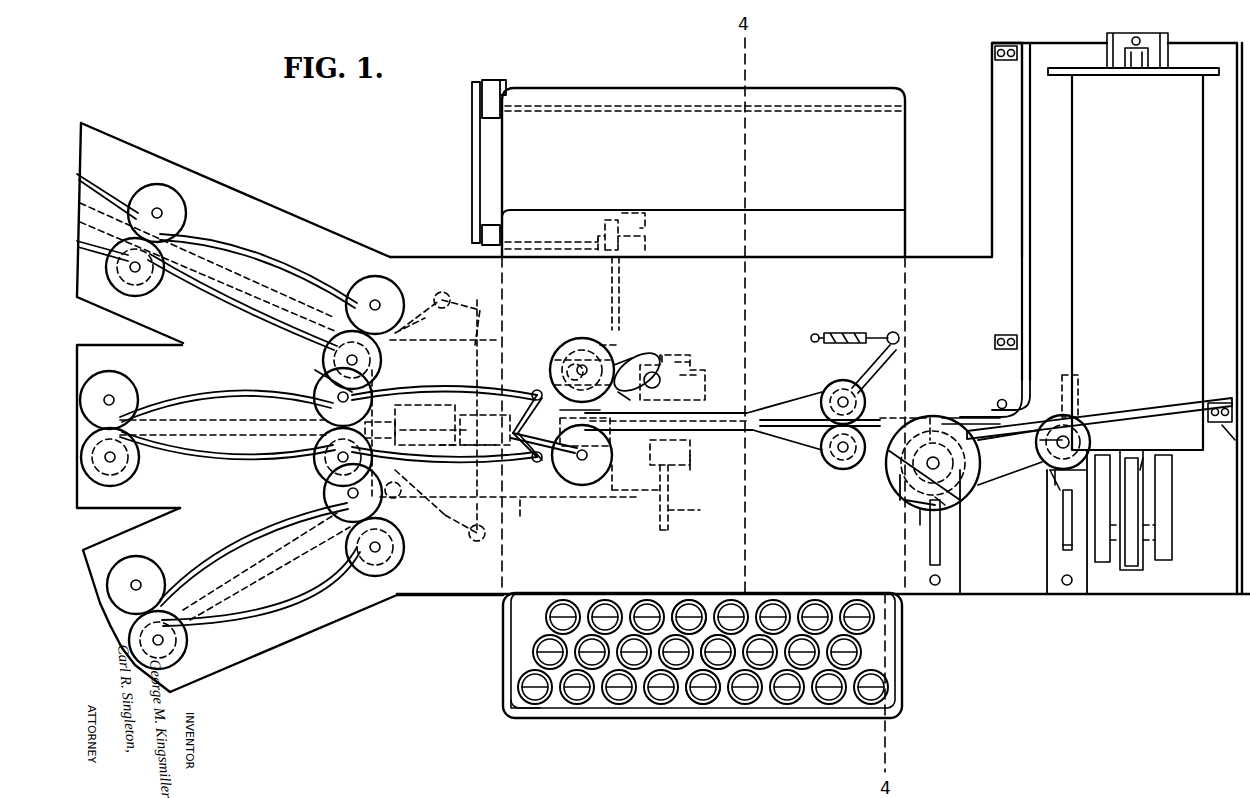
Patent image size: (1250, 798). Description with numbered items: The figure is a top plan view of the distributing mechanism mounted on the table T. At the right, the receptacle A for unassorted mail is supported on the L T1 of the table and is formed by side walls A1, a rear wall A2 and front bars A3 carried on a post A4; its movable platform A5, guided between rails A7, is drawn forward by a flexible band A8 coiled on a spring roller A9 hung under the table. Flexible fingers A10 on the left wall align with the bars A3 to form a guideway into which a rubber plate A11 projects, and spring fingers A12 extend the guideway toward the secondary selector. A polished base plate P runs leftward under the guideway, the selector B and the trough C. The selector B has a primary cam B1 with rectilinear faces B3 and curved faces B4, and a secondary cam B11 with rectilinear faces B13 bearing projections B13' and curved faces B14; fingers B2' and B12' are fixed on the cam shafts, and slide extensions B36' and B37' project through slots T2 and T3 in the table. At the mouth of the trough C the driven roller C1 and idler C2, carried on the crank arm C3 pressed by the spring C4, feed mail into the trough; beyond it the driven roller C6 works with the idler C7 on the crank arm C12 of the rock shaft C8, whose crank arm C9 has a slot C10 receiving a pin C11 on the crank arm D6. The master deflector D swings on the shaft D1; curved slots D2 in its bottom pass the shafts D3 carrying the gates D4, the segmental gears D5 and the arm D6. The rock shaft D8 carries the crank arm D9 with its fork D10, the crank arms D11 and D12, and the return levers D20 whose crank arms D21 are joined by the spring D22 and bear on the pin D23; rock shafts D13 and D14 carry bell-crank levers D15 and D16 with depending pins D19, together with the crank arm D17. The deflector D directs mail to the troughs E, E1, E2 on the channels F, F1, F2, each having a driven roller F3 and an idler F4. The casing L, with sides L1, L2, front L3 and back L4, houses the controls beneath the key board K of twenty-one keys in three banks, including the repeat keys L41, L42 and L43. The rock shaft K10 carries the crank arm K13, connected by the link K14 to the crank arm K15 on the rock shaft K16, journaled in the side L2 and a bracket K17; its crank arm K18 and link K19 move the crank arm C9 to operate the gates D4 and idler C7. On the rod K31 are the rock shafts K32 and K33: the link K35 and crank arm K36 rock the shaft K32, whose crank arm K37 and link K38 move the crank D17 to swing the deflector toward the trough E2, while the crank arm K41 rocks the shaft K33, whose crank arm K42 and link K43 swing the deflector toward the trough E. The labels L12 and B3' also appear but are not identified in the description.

The frame T is at (940, 252).
The frame upright T1 is at (1000, 78).
The frame bar T2 is at (1060, 512).
The frame bar T3 is at (945, 540).
The body A is at (1137, 262).
The side rails A1 is at (1030, 160).
The top plate A2 is at (1192, 70).
The sloped bar A3 is at (1152, 410).
The bar end A4 is at (1228, 442).
The upright A5 is at (1072, 300).
The vertical bars A7 is at (1175, 480).
The bar A8 is at (1143, 455).
The central bar A9 is at (1140, 568).
The rail A10 is at (950, 412).
The bracket A11 is at (1022, 385).
The rail A12 is at (972, 412).
The platen L is at (622, 82).
The platen side L1 is at (908, 155).
The platen side L2 is at (500, 175).
The platen frame L3 is at (520, 612).
The platen top L4 is at (690, 88).
The keyboard frame L12 is at (530, 705).
The key L41 is at (692, 600).
The key L42 is at (720, 665).
The key L43 is at (700, 700).
The keyboard K is at (905, 622).
The rod K10 is at (780, 106).
The block K13 is at (490, 78).
The bracket K14 is at (472, 128).
The block K15 is at (480, 240).
The bar K16 is at (545, 243).
The lug K17 is at (645, 218).
The bracket K18 is at (612, 215).
The rod K19 is at (622, 282).
The link K31 is at (697, 512).
The rod K32 is at (672, 480).
The block K33 is at (675, 388).
The block K35 is at (690, 450).
The lug K36 is at (690, 462).
The link K37 is at (645, 480).
The link K38 is at (640, 500).
The lug K41 is at (695, 358).
The lug K42 is at (670, 352).
The link K43 is at (520, 350).
The lower frame arm F is at (265, 652).
The middle frame arm F1 is at (115, 510).
The upper frame arm F2 is at (88, 312).
The cam roller F3 is at (158, 292).
The roller F4 is at (187, 208).
The lower lever E is at (108, 600).
The middle lever E1 is at (98, 395).
The upper lever E2 is at (122, 184).
The lens lever D is at (410, 385).
The link D1 is at (590, 415).
The pivot D2 is at (533, 392).
The link D3 is at (540, 385).
The link D4 is at (510, 435).
The block D5 is at (585, 432).
The pivot D6 is at (569, 373).
The block D8 is at (425, 425).
The bar D9 is at (470, 456).
The rod D10 is at (493, 400).
The link D11 is at (410, 475).
The link D12 is at (400, 372).
The pivot D13 is at (452, 525).
The pivot D14 is at (448, 295).
The pivot D15 is at (405, 520).
The bar D16 is at (420, 300).
The bar D17 is at (510, 513).
The rod D19 is at (490, 325).
The bar D20 is at (435, 438).
The block D21 is at (382, 433).
The link D22 is at (325, 378).
The block D23 is at (480, 430).
The bar C is at (727, 410).
The roller C1 is at (825, 462).
The roller C2 is at (825, 392).
The lever C3 is at (862, 372).
The spring C4 is at (846, 332).
The wheel C6 is at (590, 488).
The link C7 is at (622, 358).
The pivot C8 is at (658, 372).
The link C9 is at (632, 403).
The wheel C10 is at (590, 360).
The hub C11 is at (582, 350).
The link C12 is at (642, 352).
The pawl lever P is at (975, 362).
The cam wheel B is at (950, 463).
The link B1 is at (1038, 442).
The bar B2' is at (1049, 461).
The roller B3 is at (1074, 420).
The link B3' is at (1036, 469).
The connecting arm B4 is at (1095, 445).
The arm B11 is at (900, 500).
The arm B12' is at (914, 463).
The link B13 is at (910, 456).
The link B13' is at (940, 469).
The arm B14 is at (890, 475).
The lug B36' is at (1045, 556).
The lug B37' is at (967, 518).